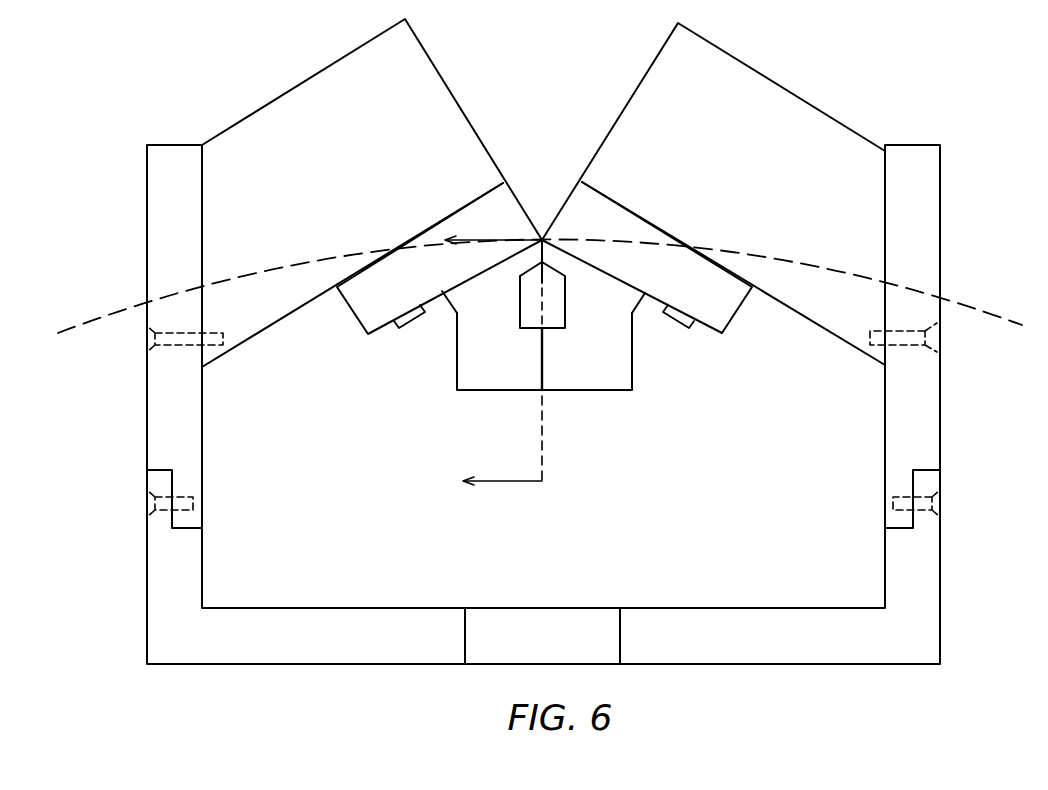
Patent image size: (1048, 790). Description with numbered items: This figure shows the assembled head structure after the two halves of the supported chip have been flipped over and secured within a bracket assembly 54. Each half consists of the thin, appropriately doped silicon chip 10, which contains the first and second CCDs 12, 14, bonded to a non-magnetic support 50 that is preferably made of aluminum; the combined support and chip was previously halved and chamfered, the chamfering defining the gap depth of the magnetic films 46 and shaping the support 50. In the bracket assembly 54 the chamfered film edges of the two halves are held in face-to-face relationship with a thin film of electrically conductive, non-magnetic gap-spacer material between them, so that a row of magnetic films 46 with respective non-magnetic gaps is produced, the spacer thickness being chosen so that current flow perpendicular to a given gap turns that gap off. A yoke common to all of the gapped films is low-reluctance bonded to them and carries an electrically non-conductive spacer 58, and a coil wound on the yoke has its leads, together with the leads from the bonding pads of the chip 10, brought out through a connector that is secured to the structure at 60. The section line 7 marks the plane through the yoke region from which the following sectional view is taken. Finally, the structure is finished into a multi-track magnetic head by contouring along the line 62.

The section line 7- 7 is at (487, 361).
The silicon chip 10 is at (348, 318).
The first CCD 12 is at (404, 321).
The second CCD 14 is at (688, 322).
The magnetic films 46 is at (446, 300).
The non-magnetic support 50 is at (456, 106).
The bracket assembly 54 is at (938, 403).
The electrically non-conductive spacer 58 is at (541, 362).
The connector securing location 60 is at (590, 373).
The contouring line 62 is at (993, 313).